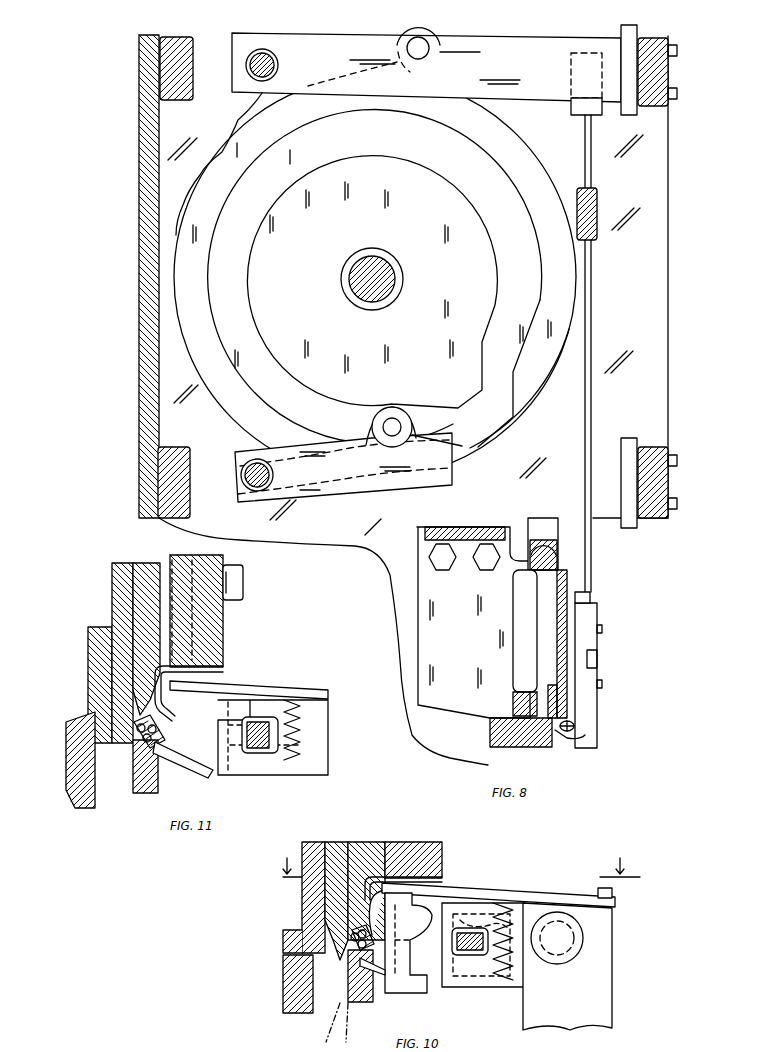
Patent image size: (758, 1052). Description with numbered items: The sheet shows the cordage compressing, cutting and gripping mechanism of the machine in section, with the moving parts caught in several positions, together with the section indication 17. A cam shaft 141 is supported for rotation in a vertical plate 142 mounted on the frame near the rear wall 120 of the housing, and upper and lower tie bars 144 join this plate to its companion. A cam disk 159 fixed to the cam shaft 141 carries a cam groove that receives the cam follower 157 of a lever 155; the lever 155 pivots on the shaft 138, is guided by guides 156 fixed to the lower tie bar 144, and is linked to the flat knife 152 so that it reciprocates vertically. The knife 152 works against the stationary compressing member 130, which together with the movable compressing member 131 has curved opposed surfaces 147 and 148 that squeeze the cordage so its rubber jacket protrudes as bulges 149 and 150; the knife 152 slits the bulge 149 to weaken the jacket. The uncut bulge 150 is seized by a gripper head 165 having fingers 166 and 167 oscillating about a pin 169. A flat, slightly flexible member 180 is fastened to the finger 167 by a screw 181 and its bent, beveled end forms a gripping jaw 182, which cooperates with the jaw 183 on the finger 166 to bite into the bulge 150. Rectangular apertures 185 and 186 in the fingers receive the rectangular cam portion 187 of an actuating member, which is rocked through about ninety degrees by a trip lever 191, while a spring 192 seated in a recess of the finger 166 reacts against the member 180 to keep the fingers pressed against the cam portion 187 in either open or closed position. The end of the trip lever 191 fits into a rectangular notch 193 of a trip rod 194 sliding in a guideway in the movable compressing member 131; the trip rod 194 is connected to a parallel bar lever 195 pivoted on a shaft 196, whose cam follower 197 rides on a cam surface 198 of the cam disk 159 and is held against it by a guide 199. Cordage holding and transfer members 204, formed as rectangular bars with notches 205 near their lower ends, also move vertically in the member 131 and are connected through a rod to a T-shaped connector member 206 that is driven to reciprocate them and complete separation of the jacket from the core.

In FIG. 10, the section line 17 is at (460, 861).
In FIG. 8, the rear wall 120 is at (139, 352).
In FIG. 8, the stationary compressing member 130 is at (565, 740).
In FIG. 11, the stationary compressing member 130 is at (131, 790).
In FIG. 10, the stationary compressing member 130 is at (352, 1005).
In FIG. 8, the movable compressing member 131 is at (575, 666).
In FIG. 11, the movable compressing member 131 is at (140, 712).
In FIG. 10, the movable compressing member 131 is at (372, 838).
In FIG. 8, the shaft 138 is at (240, 468).
In FIG. 8, the cam shaft 141 is at (343, 266).
In FIG. 8, the vertical plate 142 is at (668, 244).
In FIG. 8, the tie bars 144 is at (172, 100).
In FIG. 10, the curved opposed surface 147 is at (352, 938).
In FIG. 10, the curved opposed surface 148 is at (334, 976).
In FIG. 10, the bulge 149 is at (348, 942).
In FIG. 11, the bulge 150 is at (160, 727).
In FIG. 10, the bulge 150 is at (386, 955).
In FIG. 11, the knife 152 is at (112, 575).
In FIG. 10, the knife 152 is at (302, 884).
In FIG. 8, the lever 155 is at (357, 492).
In FIG. 8, the guides 156 is at (621, 452).
In FIG. 8, the cam follower 157 is at (396, 427).
In FIG. 8, the cam disk 159 is at (527, 156).
In FIG. 10, the gripper head 165 is at (516, 997).
In FIG. 11, the finger 166 is at (215, 773).
In FIG. 10, the finger 166 is at (468, 990).
In FIG. 10, the finger 167 is at (580, 898).
In FIG. 10, the pin 169 is at (566, 962).
In FIG. 11, the flat flexible member 180 is at (290, 682).
In FIG. 10, the flat flexible member 180 is at (495, 883).
In FIG. 10, the screw 181 is at (598, 888).
In FIG. 11, the gripping jaw 182 is at (160, 677).
In FIG. 10, the gripping jaw 182 is at (366, 891).
In FIG. 11, the gripping jaw 183 is at (183, 765).
In FIG. 10, the gripping jaw 183 is at (378, 987).
In FIG. 10, the rectangular aperture 185 is at (466, 960).
In FIG. 10, the rectangular aperture 186 is at (472, 920).
In FIG. 11, the rectangular cam portion 187 is at (260, 753).
In FIG. 10, the rectangular cam portion 187 is at (478, 956).
In FIG. 11, the trip lever 191 is at (240, 680).
In FIG. 10, the trip lever 191 is at (420, 993).
In FIG. 11, the spring 192 is at (304, 717).
In FIG. 10, the spring 192 is at (513, 968).
In FIG. 8, the rectangular notch 193 is at (597, 686).
In FIG. 10, the rectangular notch 193 is at (432, 905).
In FIG. 8, the trip rod 194 is at (591, 345).
In FIG. 11, the trip rod 194 is at (222, 663).
In FIG. 10, the trip rod 194 is at (410, 995).
In FIG. 8, the parallel bar lever 195 is at (258, 92).
In FIG. 8, the shaft 196 is at (273, 65).
In FIG. 8, the cam follower 197 is at (428, 32).
In FIG. 8, the cam surface 198 is at (494, 112).
In FIG. 8, the guide 199 is at (628, 115).
In FIG. 11, the transfer members 204 is at (190, 561).
In FIG. 10, the transfer members 204 is at (442, 856).
In FIG. 11, the notches 205 is at (224, 633).
In FIG. 10, the notches 205 is at (404, 846).
In FIG. 8, the T-shaped connector member 206 is at (598, 202).